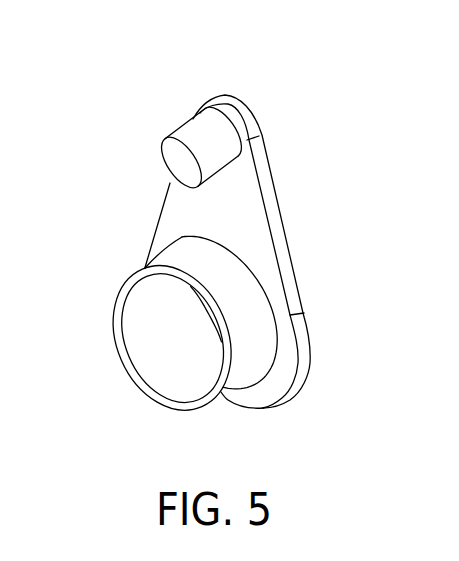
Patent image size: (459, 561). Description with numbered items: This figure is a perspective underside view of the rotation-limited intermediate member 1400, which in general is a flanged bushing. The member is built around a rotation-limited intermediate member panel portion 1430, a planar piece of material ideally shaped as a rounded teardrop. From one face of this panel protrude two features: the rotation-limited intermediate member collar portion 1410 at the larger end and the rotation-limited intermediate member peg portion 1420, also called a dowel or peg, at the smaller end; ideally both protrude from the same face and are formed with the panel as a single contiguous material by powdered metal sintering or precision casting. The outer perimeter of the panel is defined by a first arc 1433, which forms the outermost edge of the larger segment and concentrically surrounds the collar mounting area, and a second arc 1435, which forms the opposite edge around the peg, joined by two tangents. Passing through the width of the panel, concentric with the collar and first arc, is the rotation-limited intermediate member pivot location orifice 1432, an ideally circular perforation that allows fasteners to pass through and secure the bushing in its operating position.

The rotation-limited intermediate member 1400 is at (125, 93).
The rotation-limited intermediate member collar portion 1410 is at (197, 258).
The rotation-limited intermediate member peg portion 1420 is at (172, 157).
The rotation-limited intermediate member panel portion 1430 is at (156, 237).
The rotation-limited intermediate member pivot location orifice 1432 is at (147, 343).
The first arc 1433 is at (263, 410).
The second arc 1435 is at (229, 108).